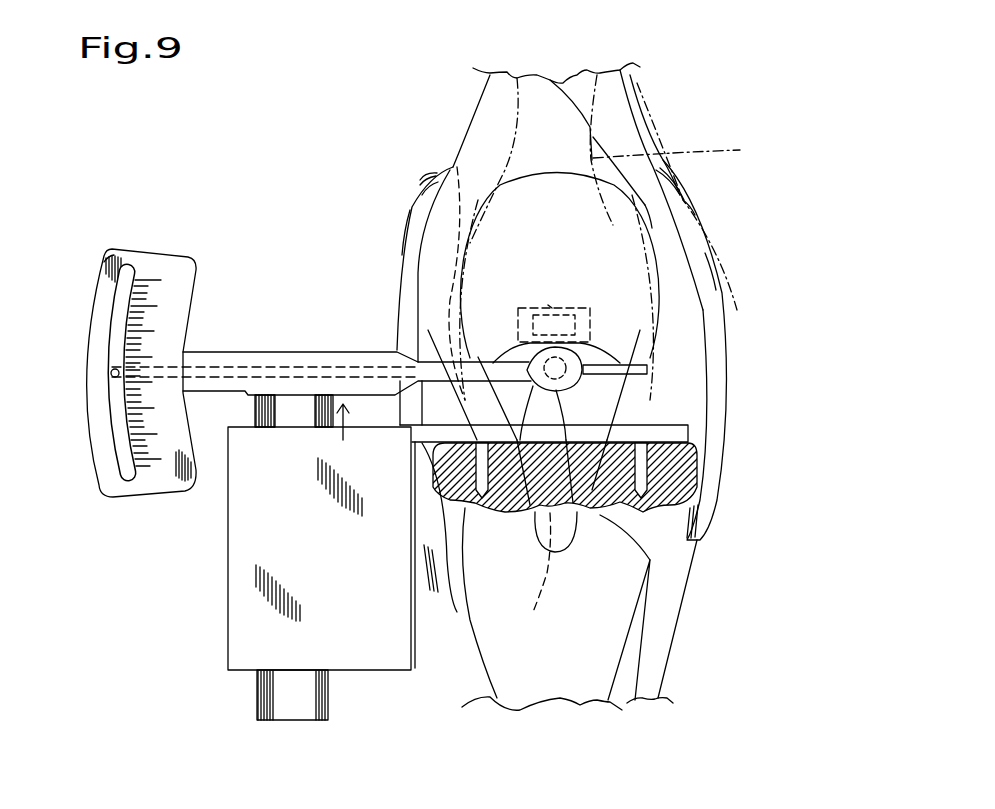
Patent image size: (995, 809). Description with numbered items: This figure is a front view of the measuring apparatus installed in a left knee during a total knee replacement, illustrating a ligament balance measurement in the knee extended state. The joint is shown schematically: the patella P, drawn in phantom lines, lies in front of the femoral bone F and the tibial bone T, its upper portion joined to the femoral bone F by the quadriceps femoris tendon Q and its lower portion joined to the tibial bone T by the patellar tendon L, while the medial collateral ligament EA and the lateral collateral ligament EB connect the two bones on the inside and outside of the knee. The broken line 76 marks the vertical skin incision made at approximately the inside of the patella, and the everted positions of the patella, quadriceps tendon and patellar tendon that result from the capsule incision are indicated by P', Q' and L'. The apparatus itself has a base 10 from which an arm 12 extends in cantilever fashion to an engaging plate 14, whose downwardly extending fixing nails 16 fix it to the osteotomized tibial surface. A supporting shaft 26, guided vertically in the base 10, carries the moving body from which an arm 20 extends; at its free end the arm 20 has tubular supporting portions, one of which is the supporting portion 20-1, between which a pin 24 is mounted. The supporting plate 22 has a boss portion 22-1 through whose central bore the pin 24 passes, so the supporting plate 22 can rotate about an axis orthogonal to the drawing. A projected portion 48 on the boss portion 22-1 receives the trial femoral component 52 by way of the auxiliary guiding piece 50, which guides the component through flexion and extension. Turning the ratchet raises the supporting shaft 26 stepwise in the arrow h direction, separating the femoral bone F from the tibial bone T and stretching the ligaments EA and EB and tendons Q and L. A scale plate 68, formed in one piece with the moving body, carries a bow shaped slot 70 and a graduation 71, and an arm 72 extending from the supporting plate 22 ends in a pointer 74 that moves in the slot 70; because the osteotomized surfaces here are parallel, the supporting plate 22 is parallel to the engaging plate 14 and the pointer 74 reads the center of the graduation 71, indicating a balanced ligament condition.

The base 10 is at (250, 650).
The arm 12 is at (448, 433).
The engaging plate 14 is at (627, 453).
The fixing nails 16 is at (463, 640).
The arm 20 is at (447, 353).
The tubular supporting portion 20-1 is at (600, 576).
The supporting plate 22 is at (660, 363).
The boss portion 22-1 is at (580, 355).
The pin 24 is at (532, 580).
The supporting shaft 26 is at (303, 400).
The projected portion 48 is at (556, 330).
The auxiliary guiding piece 50 is at (550, 305).
The femoral component 52 is at (645, 233).
The scale plate 68 is at (162, 265).
The bow shaped slot 70 is at (117, 427).
The graduation 71 is at (158, 311).
The arm 72 is at (262, 355).
The pointer 74 is at (111, 375).
The skin incision 76 is at (457, 167).
The femoral bone F is at (613, 98).
The tibial bone T is at (578, 668).
The medial collateral ligament EA is at (403, 222).
The lateral collateral ligament EB is at (705, 253).
The patella P is at (698, 411).
The everted patella P' is at (801, 345).
The quadriceps femoris tendon Q is at (676, 156).
The everted quadriceps femoris tendon Q' is at (718, 150).
The patellar tendon L is at (632, 592).
The everted patellar tendon L' is at (722, 545).
The arrow h direction h is at (353, 438).